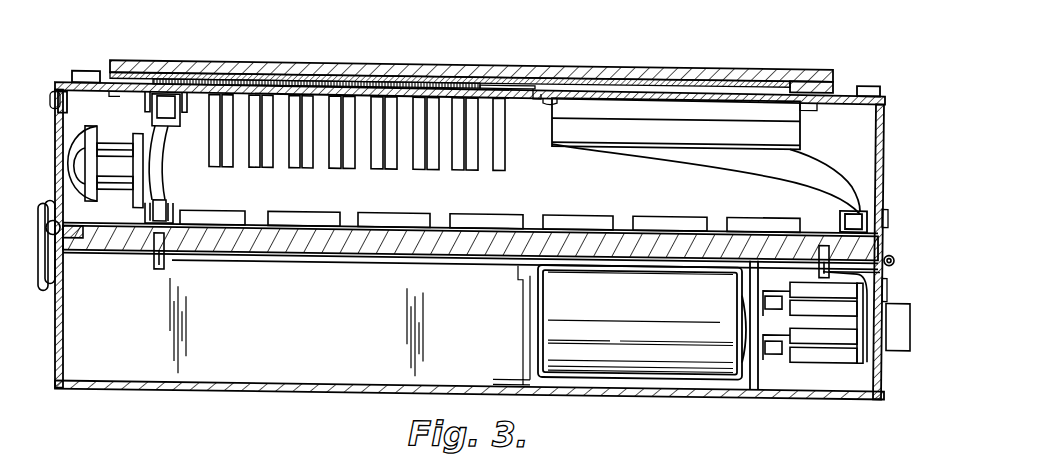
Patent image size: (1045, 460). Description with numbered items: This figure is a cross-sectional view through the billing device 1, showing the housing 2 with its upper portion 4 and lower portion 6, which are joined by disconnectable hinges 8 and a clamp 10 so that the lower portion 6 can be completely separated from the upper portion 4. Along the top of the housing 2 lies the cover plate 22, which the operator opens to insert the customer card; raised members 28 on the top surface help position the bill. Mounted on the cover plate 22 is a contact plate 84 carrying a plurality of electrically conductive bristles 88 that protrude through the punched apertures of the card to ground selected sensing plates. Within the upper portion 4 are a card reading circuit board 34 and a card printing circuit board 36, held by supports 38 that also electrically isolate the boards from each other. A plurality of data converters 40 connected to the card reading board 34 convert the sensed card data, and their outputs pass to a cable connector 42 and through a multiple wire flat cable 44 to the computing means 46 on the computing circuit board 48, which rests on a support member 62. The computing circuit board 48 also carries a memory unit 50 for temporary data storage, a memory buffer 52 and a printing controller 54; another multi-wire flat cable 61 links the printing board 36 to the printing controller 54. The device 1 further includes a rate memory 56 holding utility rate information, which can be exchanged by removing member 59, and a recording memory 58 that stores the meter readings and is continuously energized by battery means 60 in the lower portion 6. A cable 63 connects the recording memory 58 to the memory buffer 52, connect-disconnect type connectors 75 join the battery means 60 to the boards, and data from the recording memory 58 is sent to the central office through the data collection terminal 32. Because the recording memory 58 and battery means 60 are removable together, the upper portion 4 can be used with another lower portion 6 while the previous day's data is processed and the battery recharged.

The billing device 1 is at (763, 51).
The housing 2 is at (51, 329).
The upper portion 4 is at (465, 190).
The lower portion 6 is at (263, 333).
The disconnectable hinges 8 is at (885, 215).
The clamp 10 is at (43, 219).
The cover plate 22 is at (457, 58).
The raised members 28 is at (83, 69).
The data collection terminal 32 is at (895, 334).
The card reading circuit board 34 is at (507, 87).
The card printing circuit board 36 is at (697, 91).
The supports 38 is at (113, 96).
The data converters 40 is at (427, 165).
The cable connector 42 is at (168, 125).
The multiple wire flat cable 44 is at (160, 161).
The computing means 46 is at (455, 215).
The computing circuit board 48 is at (527, 206).
The memory unit 50 is at (590, 212).
The memory buffer 52 is at (660, 211).
The printing controller 54 is at (757, 210).
The rate memory 56 is at (83, 131).
The recording memory 58 is at (820, 352).
The member 59 is at (55, 92).
The battery means 60 is at (622, 294).
The multi-wire flat cable 61 is at (750, 152).
The support member 62 is at (78, 249).
The cable 63 is at (883, 267).
The connect-disconnect type connectors 75 is at (173, 258).
The contact plate 84 is at (150, 69).
The electrically conductive bristles 88 is at (217, 76).